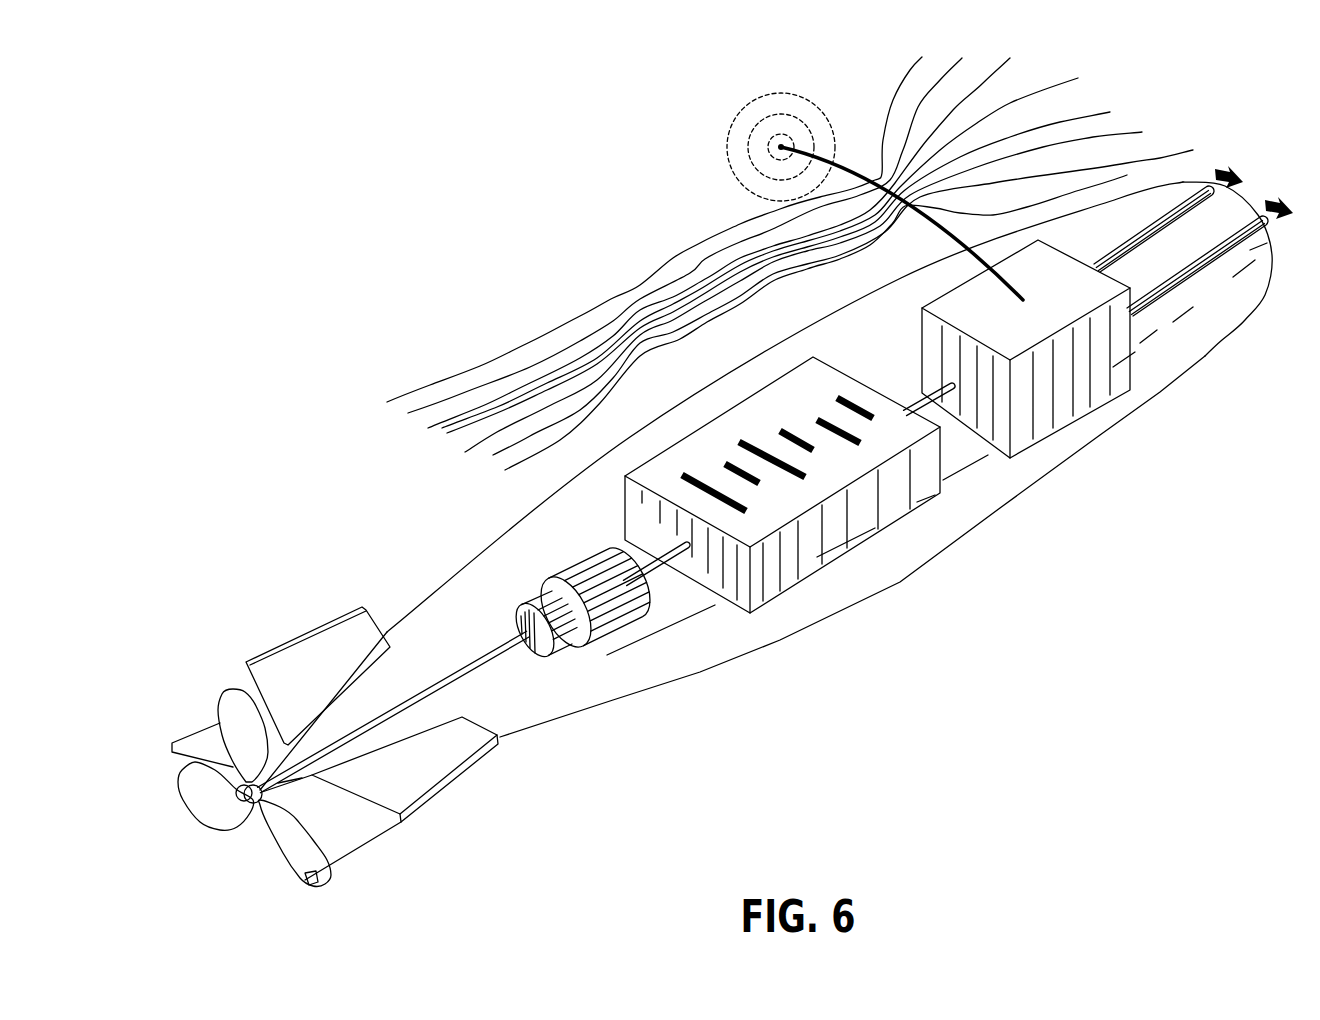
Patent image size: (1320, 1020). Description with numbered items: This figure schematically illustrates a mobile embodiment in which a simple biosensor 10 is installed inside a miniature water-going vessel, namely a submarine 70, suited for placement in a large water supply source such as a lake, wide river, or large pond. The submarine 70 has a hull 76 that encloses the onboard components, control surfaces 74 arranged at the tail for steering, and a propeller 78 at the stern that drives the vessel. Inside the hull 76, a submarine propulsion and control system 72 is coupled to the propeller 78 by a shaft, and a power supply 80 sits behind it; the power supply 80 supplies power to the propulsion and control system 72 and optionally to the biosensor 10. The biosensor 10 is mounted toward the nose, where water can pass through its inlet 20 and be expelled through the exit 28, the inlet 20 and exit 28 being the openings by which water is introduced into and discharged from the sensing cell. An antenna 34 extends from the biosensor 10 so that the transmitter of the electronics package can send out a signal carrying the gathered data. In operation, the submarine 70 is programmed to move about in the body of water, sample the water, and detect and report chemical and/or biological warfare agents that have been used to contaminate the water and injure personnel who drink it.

The biosensor 10 is at (973, 313).
The inlet 20 is at (1205, 270).
The exit 28 is at (1183, 197).
The antenna 34 is at (968, 256).
The submarine 70 is at (420, 484).
The submarine propulsion and control system 72 is at (595, 648).
The control surfaces 74 is at (390, 828).
The hull 76 is at (1032, 498).
The propeller 78 is at (272, 845).
The power supply 80 is at (788, 578).